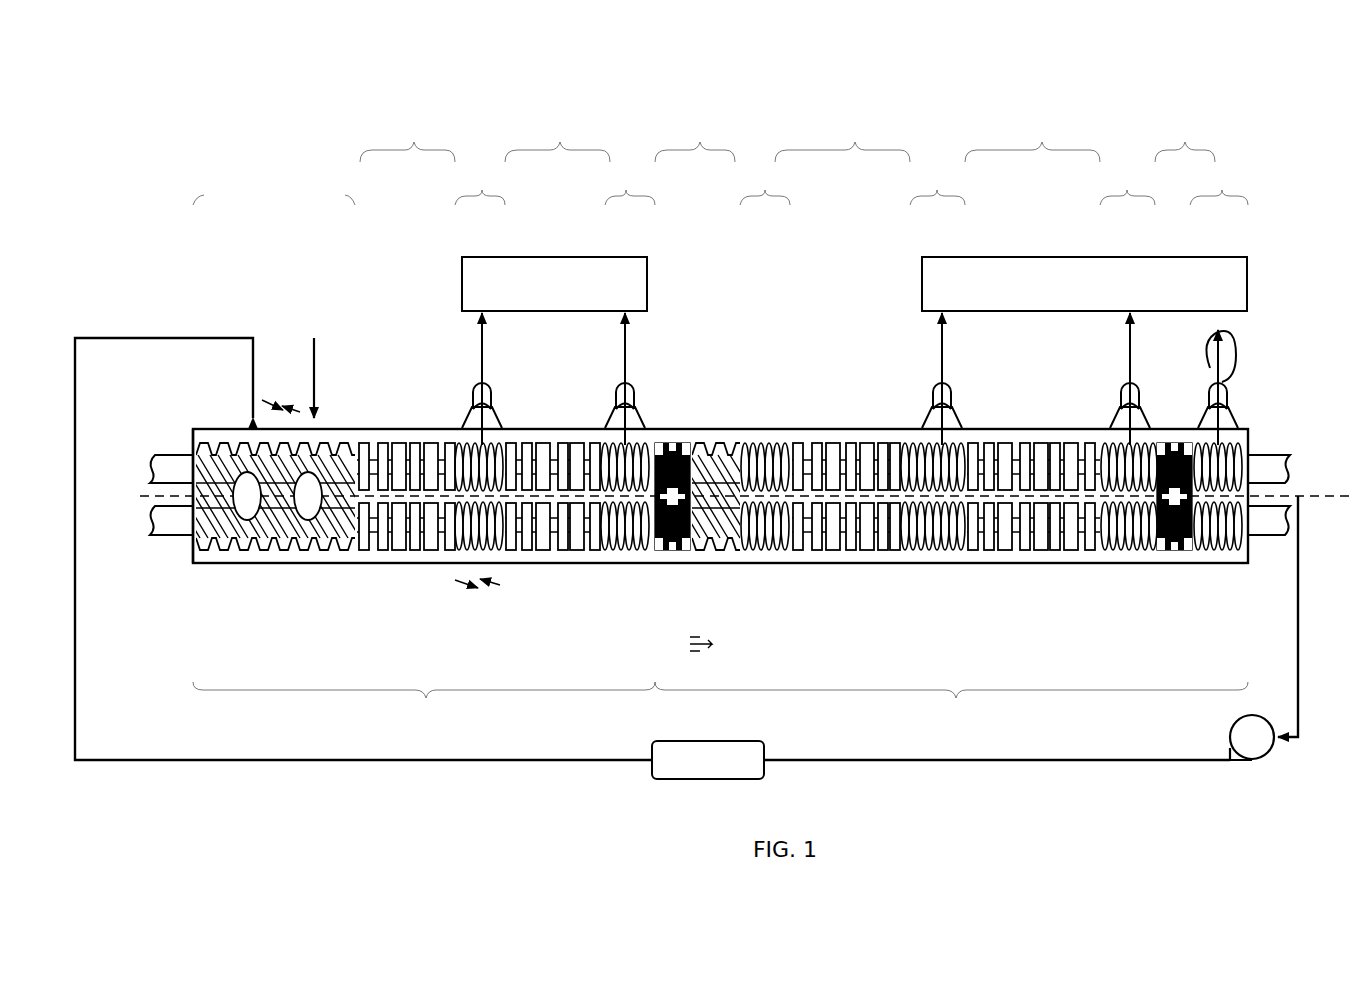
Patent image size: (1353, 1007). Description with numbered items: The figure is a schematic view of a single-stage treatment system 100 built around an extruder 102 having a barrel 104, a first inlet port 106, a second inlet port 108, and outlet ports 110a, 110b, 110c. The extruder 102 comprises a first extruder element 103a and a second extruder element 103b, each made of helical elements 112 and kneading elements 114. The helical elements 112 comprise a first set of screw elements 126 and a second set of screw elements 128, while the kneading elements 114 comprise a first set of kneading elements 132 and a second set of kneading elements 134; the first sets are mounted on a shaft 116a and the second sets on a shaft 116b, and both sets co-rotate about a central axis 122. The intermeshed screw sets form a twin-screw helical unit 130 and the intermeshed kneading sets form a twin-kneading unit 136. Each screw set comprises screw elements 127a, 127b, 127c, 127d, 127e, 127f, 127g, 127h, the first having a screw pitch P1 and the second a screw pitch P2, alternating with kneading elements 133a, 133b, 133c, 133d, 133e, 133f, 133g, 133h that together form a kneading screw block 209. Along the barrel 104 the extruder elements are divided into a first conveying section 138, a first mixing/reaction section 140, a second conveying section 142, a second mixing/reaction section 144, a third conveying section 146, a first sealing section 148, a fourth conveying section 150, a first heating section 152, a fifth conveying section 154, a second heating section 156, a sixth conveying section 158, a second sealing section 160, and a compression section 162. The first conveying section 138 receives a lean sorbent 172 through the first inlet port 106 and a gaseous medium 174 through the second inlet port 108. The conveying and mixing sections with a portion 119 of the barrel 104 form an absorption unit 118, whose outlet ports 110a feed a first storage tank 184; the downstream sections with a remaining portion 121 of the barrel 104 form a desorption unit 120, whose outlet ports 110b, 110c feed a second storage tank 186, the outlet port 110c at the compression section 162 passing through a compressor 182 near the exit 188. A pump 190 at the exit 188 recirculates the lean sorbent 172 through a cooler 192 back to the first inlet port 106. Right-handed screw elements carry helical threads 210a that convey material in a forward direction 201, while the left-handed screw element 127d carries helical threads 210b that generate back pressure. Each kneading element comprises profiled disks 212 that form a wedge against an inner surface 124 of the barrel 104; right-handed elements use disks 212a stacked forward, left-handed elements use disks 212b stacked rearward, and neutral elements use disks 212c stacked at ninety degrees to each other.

The treatment system 100 is at (198, 86).
The extruder 102 is at (165, 547).
The first extruder element 103a is at (1250, 445).
The second extruder element 103b is at (1253, 552).
The barrel 104 is at (226, 428).
The first inlet port 106 is at (210, 445).
The second inlet port 108 is at (318, 445).
The outlet ports 110a is at (492, 385).
The outlet ports 110b is at (950, 400).
The outlet port 110c is at (1228, 396).
The helical elements 112 is at (256, 566).
The kneading elements 114 is at (385, 440).
The shaft 116a is at (137, 459).
The shaft 116b is at (137, 509).
The absorption unit 118 is at (426, 698).
The portion of the barrel 119 is at (600, 572).
The desorption unit 120 is at (956, 698).
The remaining portion of the barrel 121 is at (760, 575).
The central axis 122 is at (1300, 500).
The inner surface of the barrel 124 is at (270, 566).
The first set of screw elements 126 is at (372, 445).
The first screw element 127a is at (322, 445).
The second screw element 127b is at (500, 445).
The screw element 127c is at (640, 445).
The left handed screw element 127d is at (706, 566).
The screw element 127e is at (775, 445).
The screw element 127f is at (955, 566).
The screw element 127g is at (1140, 445).
The screw element 127h is at (1208, 566).
The second set of screw elements 128 is at (362, 556).
The twin-screw helical unit 130 is at (315, 566).
The first set of kneading elements 132 is at (488, 445).
The kneading element 133a is at (400, 445).
The kneading element 133b is at (570, 445).
The kneading element 133c is at (758, 445).
The kneading element 133d is at (800, 560).
The kneading element 133e is at (862, 566).
The kneading element 133f is at (998, 566).
The kneading element 133g is at (1085, 445).
The kneading element 133h is at (1172, 445).
The second set of kneading elements 134 is at (390, 556).
The twin-kneading unit 136 is at (410, 566).
The first conveying section 138 is at (278, 192).
The first mixing/reaction section 140 is at (414, 142).
The second conveying section 142 is at (482, 190).
The second mixing/reaction section 144 is at (560, 142).
The third conveying section 146 is at (626, 190).
The first sealing section 148 is at (700, 142).
The fourth conveying section 150 is at (765, 190).
The first heating section 152 is at (855, 142).
The fifth conveying section 154 is at (937, 190).
The second heating section 156 is at (1042, 142).
The sixth conveying section 158 is at (1127, 190).
The second sealing section 160 is at (1185, 142).
The compression section 162 is at (1222, 190).
The lean sorbent 172 is at (246, 338).
The gaseous medium 174 is at (314, 338).
The compressor 182 is at (1240, 345).
The first storage tank 184 is at (554, 284).
The second storage tank 186 is at (1084, 284).
The exit 188 is at (1243, 566).
The pump 190 is at (1228, 730).
The cooler 192 is at (708, 760).
The forward direction 201 is at (713, 661).
The kneading screw block 209 is at (905, 435).
The helical threads 210a is at (246, 548).
The helical threads 210b is at (715, 445).
The profiled disks 212 is at (920, 440).
The profiled disks 212a is at (832, 440).
The profiled disks 212b is at (672, 560).
The profiled disks 212c is at (878, 566).
The first screw pitch P1 is at (278, 428).
The second screw pitch P2 is at (482, 600).